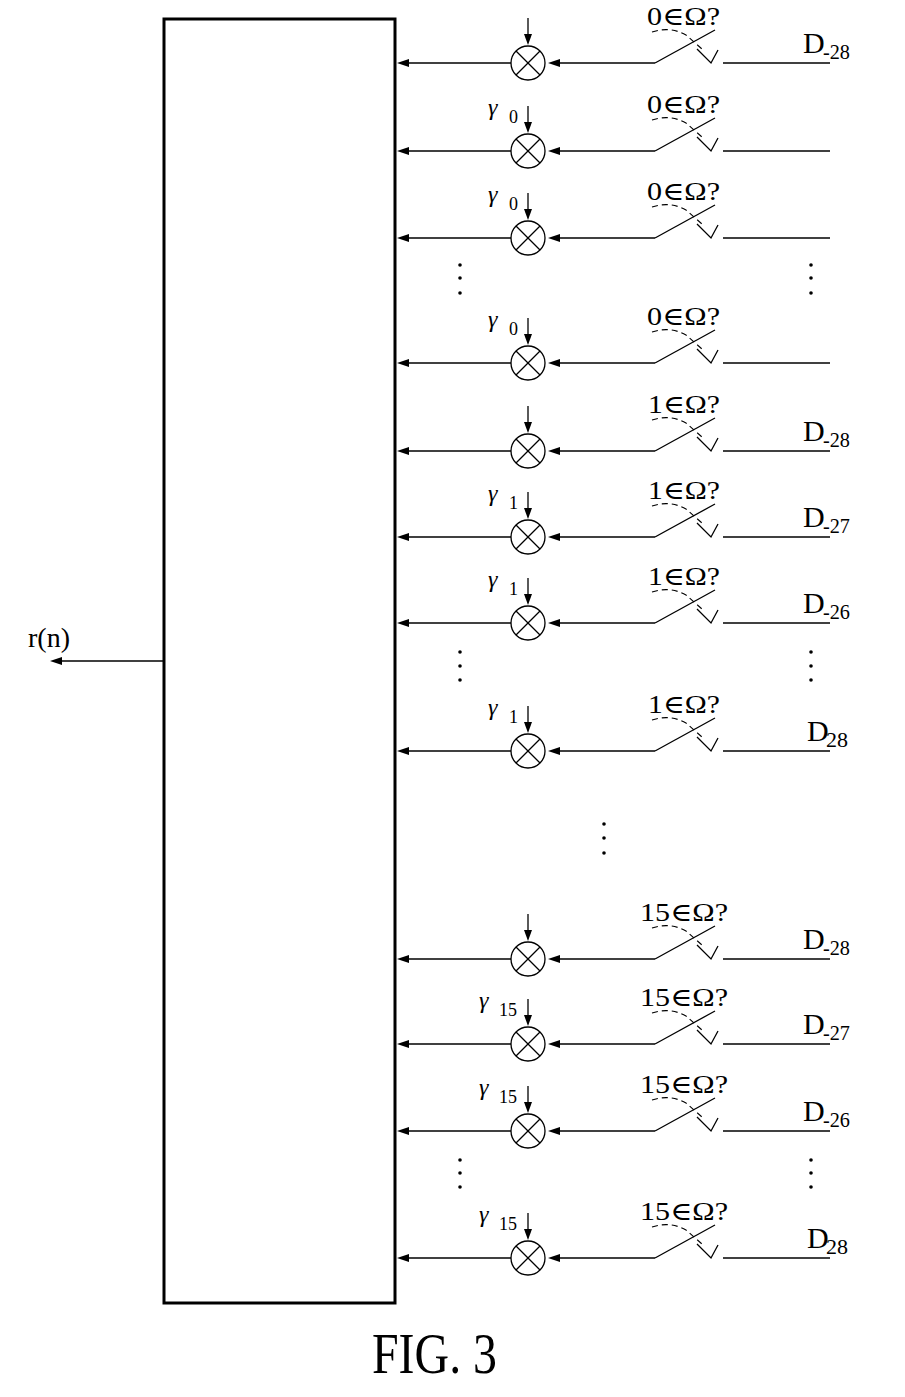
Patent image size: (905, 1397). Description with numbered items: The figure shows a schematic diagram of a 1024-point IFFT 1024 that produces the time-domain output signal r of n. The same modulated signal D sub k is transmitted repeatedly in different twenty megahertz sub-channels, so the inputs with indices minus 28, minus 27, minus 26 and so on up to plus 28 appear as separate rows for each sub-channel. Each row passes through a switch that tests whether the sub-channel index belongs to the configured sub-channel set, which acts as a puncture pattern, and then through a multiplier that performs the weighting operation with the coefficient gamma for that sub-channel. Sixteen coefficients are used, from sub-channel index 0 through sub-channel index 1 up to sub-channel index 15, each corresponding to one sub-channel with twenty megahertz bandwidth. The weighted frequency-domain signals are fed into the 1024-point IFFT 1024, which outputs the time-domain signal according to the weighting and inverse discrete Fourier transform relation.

The 1024-point IFFT 1024 is at (279, 661).
The sub-channel index 0 is at (613, 43).
The sub-channel index 1 is at (613, 431).
The sub-channel index 15 is at (613, 939).
The modulated signal index 28 is at (622, 349).
The modulated signal index - 27 is at (623, 137).
The modulated signal index - 26 is at (623, 224).